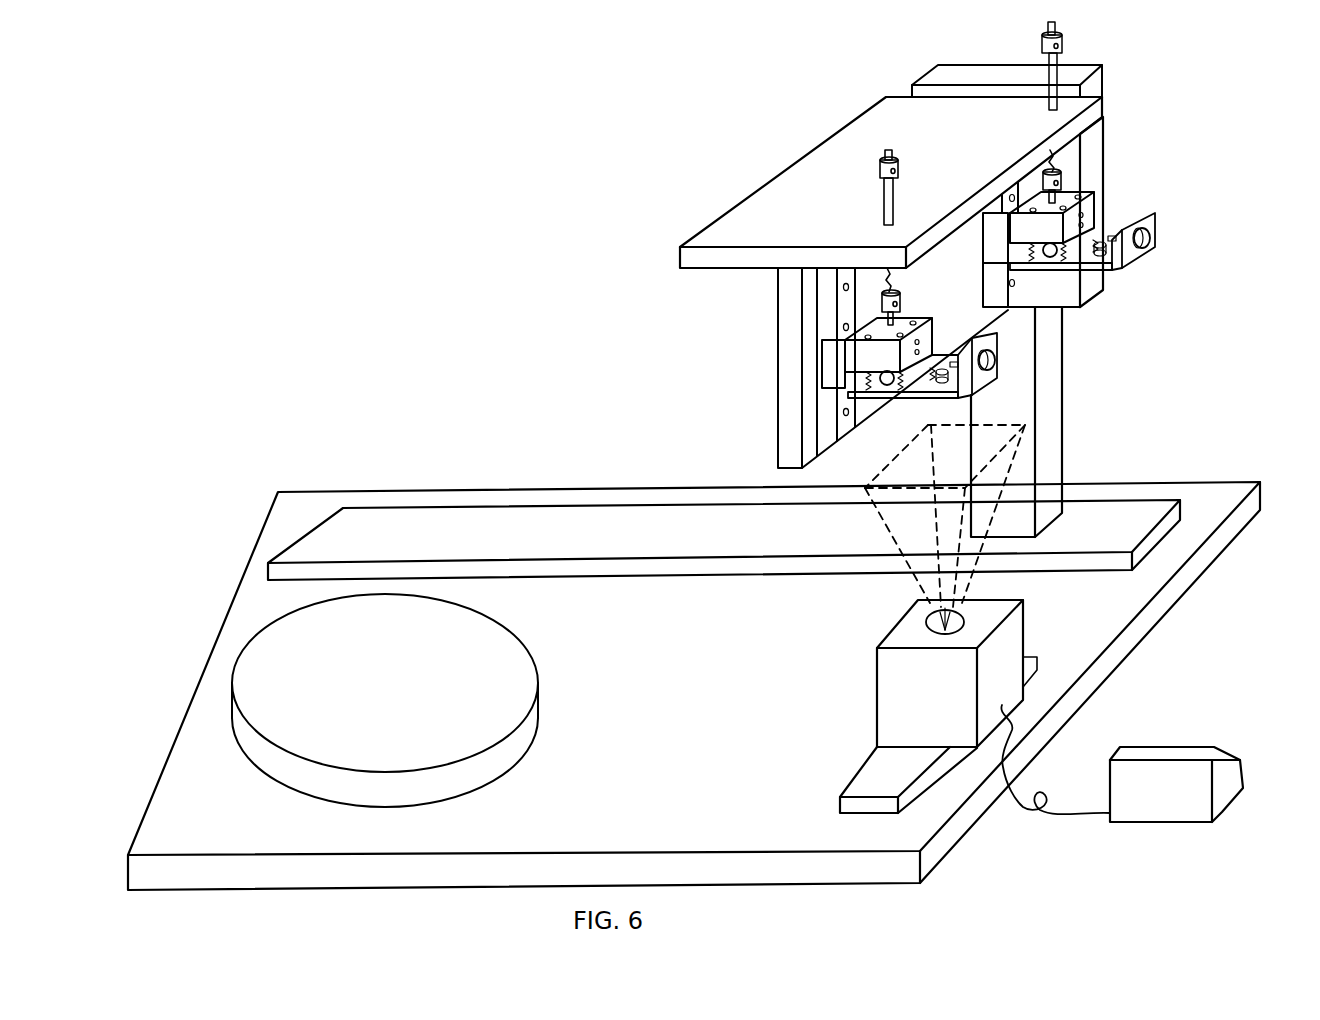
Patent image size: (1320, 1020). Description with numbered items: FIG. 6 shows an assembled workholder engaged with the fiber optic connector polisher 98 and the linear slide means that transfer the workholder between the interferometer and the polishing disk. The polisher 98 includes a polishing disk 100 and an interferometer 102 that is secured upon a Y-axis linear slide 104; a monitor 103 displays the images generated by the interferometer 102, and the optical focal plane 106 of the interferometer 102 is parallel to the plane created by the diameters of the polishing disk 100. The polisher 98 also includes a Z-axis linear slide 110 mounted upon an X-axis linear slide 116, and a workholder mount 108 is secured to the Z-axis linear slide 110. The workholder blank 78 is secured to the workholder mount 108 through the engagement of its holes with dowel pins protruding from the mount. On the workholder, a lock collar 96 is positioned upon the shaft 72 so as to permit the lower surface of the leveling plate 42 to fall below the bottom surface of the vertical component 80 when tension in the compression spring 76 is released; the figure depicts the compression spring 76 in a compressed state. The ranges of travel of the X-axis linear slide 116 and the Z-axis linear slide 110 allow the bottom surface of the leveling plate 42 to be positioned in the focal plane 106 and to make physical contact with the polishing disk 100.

The leveling plate 42 is at (922, 383).
The shaft 72 is at (898, 193).
The compression spring 76 is at (898, 280).
The workholder blank 78 is at (733, 227).
The vertical component 80 is at (788, 452).
The lock collar 96 is at (900, 152).
The fiber optic connector polisher 98 is at (243, 517).
The polishing disk 100 is at (294, 713).
The interferometer 102 is at (888, 688).
The monitor 103 is at (1185, 822).
The Y-axis linear slide 104 is at (870, 779).
The optical focal plane 106 is at (910, 460).
The workholder mount 108 is at (1103, 143).
The Z-axis linear slide 110 is at (1063, 377).
The X-axis linear slide 116 is at (708, 525).